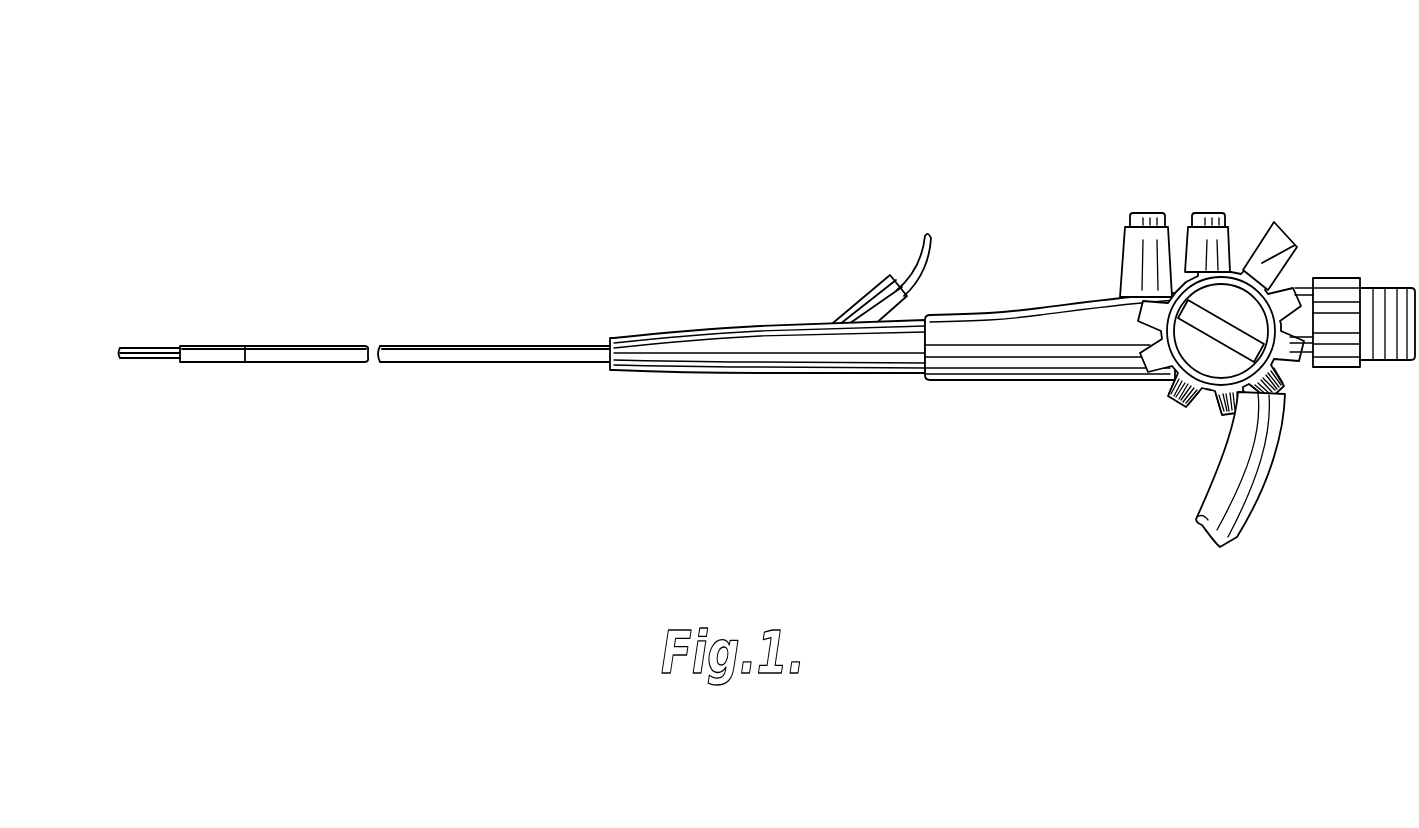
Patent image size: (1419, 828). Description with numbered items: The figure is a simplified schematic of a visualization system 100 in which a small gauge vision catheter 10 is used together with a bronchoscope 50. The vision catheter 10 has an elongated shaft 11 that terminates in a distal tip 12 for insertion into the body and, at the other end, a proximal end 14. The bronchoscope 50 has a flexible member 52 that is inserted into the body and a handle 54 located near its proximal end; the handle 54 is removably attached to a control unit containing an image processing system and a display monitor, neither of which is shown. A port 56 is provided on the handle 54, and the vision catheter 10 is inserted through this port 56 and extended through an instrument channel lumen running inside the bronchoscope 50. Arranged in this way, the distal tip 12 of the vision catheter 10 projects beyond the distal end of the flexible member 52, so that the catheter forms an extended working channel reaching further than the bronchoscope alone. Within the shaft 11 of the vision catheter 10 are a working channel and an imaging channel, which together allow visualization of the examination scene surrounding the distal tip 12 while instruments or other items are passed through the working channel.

The visualization system 100 is at (897, 122).
The vision catheter 10 is at (174, 343).
The elongated shaft 11 is at (160, 348).
The distal tip 12 is at (120, 349).
The proximal end 14 is at (918, 249).
The bronchoscope 50 is at (738, 327).
The flexible member 52 is at (525, 345).
The handle 54 is at (1051, 306).
The port 56 is at (857, 298).